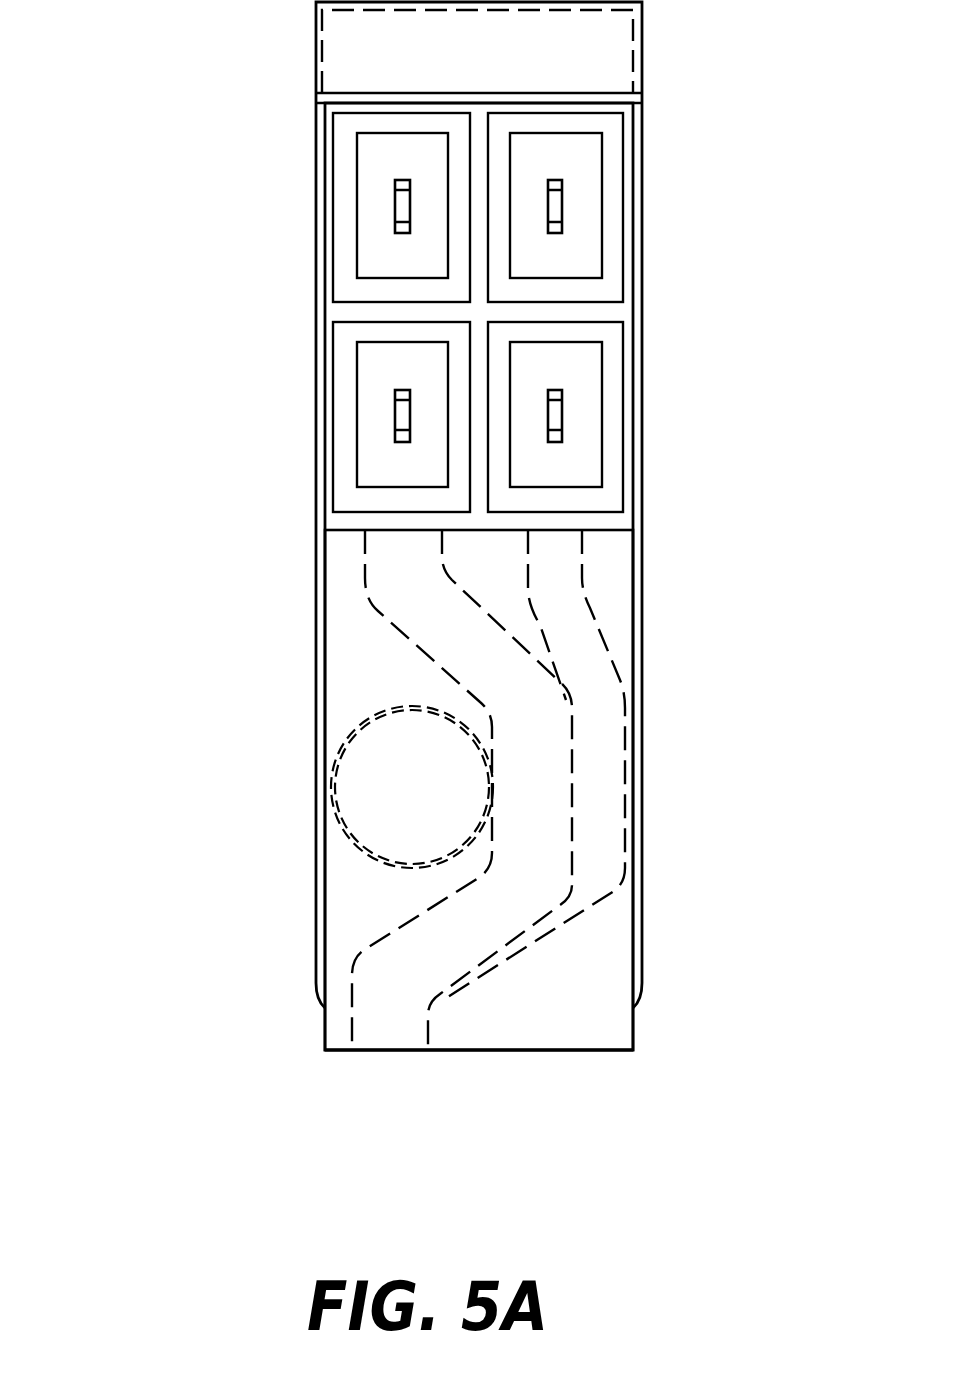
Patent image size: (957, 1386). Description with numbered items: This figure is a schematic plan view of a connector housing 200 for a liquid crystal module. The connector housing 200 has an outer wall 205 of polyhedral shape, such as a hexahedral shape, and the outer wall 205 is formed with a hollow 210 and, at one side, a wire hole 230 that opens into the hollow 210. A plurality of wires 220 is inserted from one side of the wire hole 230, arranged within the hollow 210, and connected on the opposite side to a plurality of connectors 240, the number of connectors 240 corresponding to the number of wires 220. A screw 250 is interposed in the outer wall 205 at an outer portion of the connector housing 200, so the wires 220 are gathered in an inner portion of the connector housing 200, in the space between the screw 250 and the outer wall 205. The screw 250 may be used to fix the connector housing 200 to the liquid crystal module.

The connector housing 200 is at (232, 441).
The outer wall 205 is at (320, 563).
The hollow 210 is at (350, 647).
The wires 220 is at (548, 730).
The wire hole 230 is at (487, 1086).
The connectors 240 is at (356, 292).
The screw 250 is at (352, 855).